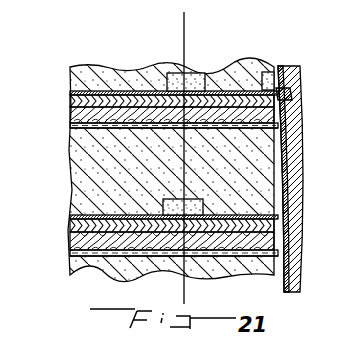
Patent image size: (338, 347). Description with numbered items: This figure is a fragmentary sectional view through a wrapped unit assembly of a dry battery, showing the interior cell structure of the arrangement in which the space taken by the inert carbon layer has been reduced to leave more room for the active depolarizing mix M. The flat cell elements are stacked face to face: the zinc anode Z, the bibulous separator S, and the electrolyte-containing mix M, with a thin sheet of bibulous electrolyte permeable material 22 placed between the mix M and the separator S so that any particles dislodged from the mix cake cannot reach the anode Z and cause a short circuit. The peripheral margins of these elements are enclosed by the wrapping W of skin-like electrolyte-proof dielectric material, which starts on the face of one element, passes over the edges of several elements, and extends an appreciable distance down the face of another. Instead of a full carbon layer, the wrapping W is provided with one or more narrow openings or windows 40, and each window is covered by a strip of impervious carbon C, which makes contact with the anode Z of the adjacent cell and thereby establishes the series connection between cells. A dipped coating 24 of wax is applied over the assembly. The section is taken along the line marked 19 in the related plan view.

The mix M is at (80, 68).
The wrapping W is at (127, 92).
The anode Z is at (72, 92).
The separator S is at (72, 116).
The electrolyte permeable material 22 is at (86, 128).
The carbon C is at (191, 74).
The windows 40 is at (212, 66).
The dipped coating 24 is at (290, 98).
The section line 19 is at (182, 16).